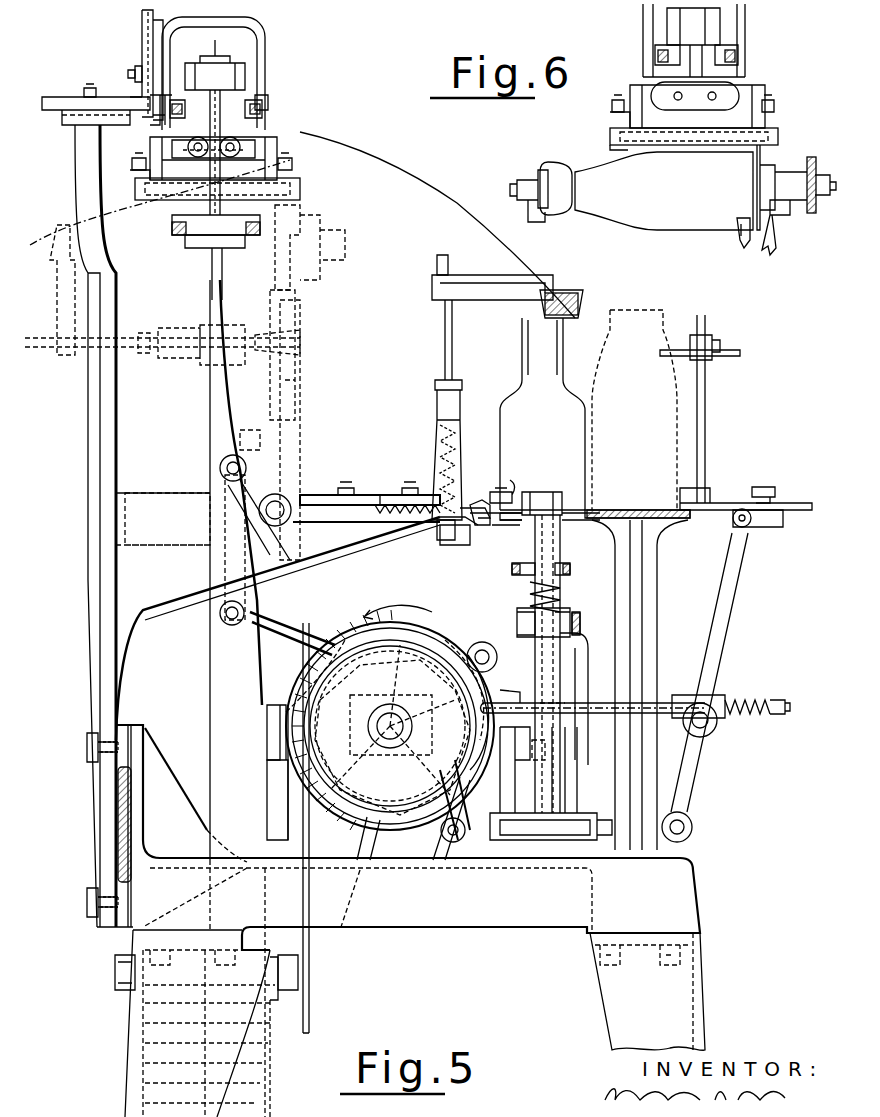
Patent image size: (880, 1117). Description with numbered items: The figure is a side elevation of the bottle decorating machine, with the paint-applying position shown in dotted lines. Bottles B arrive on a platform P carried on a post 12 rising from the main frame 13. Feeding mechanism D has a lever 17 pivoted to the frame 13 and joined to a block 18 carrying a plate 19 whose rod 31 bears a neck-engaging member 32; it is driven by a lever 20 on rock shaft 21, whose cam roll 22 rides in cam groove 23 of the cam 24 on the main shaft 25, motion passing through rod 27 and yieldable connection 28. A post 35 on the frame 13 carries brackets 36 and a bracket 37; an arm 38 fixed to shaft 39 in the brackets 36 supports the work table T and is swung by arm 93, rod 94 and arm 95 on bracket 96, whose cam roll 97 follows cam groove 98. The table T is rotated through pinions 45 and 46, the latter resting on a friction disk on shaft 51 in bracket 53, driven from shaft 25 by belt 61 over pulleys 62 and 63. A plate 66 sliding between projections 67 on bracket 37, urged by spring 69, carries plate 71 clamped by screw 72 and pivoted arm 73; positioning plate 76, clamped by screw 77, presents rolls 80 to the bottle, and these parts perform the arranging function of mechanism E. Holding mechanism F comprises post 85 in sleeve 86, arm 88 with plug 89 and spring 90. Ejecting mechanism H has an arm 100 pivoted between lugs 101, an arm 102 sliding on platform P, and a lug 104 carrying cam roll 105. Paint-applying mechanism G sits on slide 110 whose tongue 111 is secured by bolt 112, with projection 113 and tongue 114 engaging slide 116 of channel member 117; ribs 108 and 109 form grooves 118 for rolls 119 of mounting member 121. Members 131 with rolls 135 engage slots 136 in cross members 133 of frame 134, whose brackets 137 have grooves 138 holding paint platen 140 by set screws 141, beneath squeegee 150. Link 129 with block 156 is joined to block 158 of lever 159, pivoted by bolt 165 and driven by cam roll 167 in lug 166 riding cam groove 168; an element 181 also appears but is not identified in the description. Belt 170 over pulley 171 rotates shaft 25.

In FIG. 5, the post 12 is at (648, 622).
In FIG. 5, the main frame 13 is at (680, 890).
In FIG. 5, the lever 17 is at (720, 635).
In FIG. 5, the block 18 is at (775, 525).
In FIG. 5, the plate 19 is at (793, 500).
In FIG. 5, the lever 20 is at (440, 790).
In FIG. 5, the rock shaft 21 is at (460, 810).
In FIG. 5, the cam roll 22 is at (455, 655).
In FIG. 5, the cam groove 23 is at (462, 650).
In FIG. 5, the cam 24 is at (362, 820).
In FIG. 5, the main shaft 25 is at (380, 726).
In FIG. 5, the rod 27 is at (610, 713).
In FIG. 5, the pivotable and yieldable connection 28 is at (725, 700).
In FIG. 5, the rod 31 is at (706, 408).
In FIG. 5, the member 32 is at (678, 350).
In FIG. 5, the post 35 is at (100, 420).
In FIG. 5, the brackets 36 is at (152, 510).
In FIG. 5, the bracket 37 is at (200, 575).
In FIG. 6, the arm 38 is at (770, 238).
In FIG. 5, the arm 38 is at (288, 390).
In FIG. 5, the shaft 39 is at (270, 530).
In FIG. 5, the pinion 45 is at (335, 258).
In FIG. 5, the pinion 46 is at (300, 270).
In FIG. 5, the shaft 51 is at (548, 746).
In FIG. 5, the bracket 53 is at (590, 657).
In FIG. 5, the belt 61 is at (505, 700).
In FIG. 5, the pulley 62 is at (300, 810).
In FIG. 5, the pulley 63 is at (565, 700).
In FIG. 5, the plate 66 is at (400, 522).
In FIG. 5, the projections 67 is at (440, 526).
In FIG. 5, the spring 69 is at (412, 530).
In FIG. 5, the plate 71 is at (392, 503).
In FIG. 5, the clamping screw 72 is at (410, 486).
In FIG. 5, the arm 73 is at (482, 520).
In FIG. 5, the bottle positioning plate 76 is at (360, 496).
In FIG. 5, the clamping screw 77 is at (346, 486).
In FIG. 5, the roll 80 is at (508, 490).
In FIG. 5, the post 85 is at (440, 256).
In FIG. 5, the sleeve 86 is at (435, 400).
In FIG. 5, the arm 88 is at (485, 283).
In FIG. 5, the plug 89 is at (560, 296).
In FIG. 5, the spring 90 is at (455, 462).
In FIG. 5, the arm 93 is at (250, 478).
In FIG. 5, the rod 94 is at (225, 520).
In FIG. 5, the arm 95 is at (290, 632).
In FIG. 5, the bracket 96 is at (500, 640).
In FIG. 5, the cam roll 97 is at (401, 607).
In FIG. 5, the cam groove 98 is at (440, 818).
In FIG. 5, the arm 100 is at (545, 550).
In FIG. 5, the lugs 101 is at (580, 843).
In FIG. 5, the arm 102 is at (542, 492).
In FIG. 5, the lug 104 is at (556, 740).
In FIG. 5, the cam roll 105 is at (512, 735).
In FIG. 5, the rib 108 is at (168, 128).
In FIG. 5, the rib 109 is at (278, 66).
In FIG. 5, the slide 110 is at (70, 97).
In FIG. 5, the tongue 111 is at (52, 112).
In FIG. 5, the bolt 112 is at (90, 88).
In FIG. 5, the projection 113 is at (142, 33).
In FIG. 5, the tongue 114 is at (145, 30).
In FIG. 5, the slide 116 is at (163, 22).
In FIG. 6, the inverted channel member 117 is at (748, 22).
In FIG. 5, the inverted channel member 117 is at (262, 48).
In FIG. 5, the groove 118 is at (135, 74).
In FIG. 6, the rolls 119 is at (660, 48).
In FIG. 5, the rolls 119 is at (178, 104).
In FIG. 6, the mounting member 121 is at (712, 40).
In FIG. 5, the mounting member 121 is at (226, 47).
In FIG. 5, the link 129 is at (238, 155).
In FIG. 6, the member 131 is at (690, 106).
In FIG. 5, the member 131 is at (214, 160).
In FIG. 6, the cross members 133 is at (655, 92).
In FIG. 5, the cross members 133 is at (290, 168).
In FIG. 6, the rectangular frame 134 is at (612, 120).
In FIG. 5, the rectangular frame 134 is at (130, 176).
In FIG. 5, the rolls 135 is at (240, 140).
In FIG. 5, the inclined elongated slots 136 is at (240, 152).
In FIG. 6, the bracket 137 is at (780, 132).
In FIG. 5, the bracket 137 is at (302, 186).
In FIG. 6, the groove 138 is at (775, 142).
In FIG. 5, the groove 138 is at (295, 194).
In FIG. 6, the paint platen 140 is at (592, 137).
In FIG. 5, the paint platen 140 is at (290, 200).
In FIG. 6, the set screws 141 is at (618, 100).
In FIG. 5, the set screws 141 is at (130, 166).
In FIG. 5, the squeegee 150 is at (160, 198).
In FIG. 5, the block 156 is at (172, 222).
In FIG. 5, the block 158 is at (232, 248).
In FIG. 5, the lever 159 is at (220, 405).
In FIG. 5, the bolt 165 is at (115, 972).
In FIG. 5, the lug 166 is at (271, 704).
In FIG. 5, the cam roll 167 is at (281, 800).
In FIG. 5, the cam groove 168 is at (310, 830).
In FIG. 5, the belt 170 is at (310, 968).
In FIG. 5, the pulley 171 is at (380, 850).
In FIG. 5, the block 181 is at (130, 72).
In FIG. 6, the bottle B is at (664, 230).
In FIG. 5, the bottle B is at (508, 378).
In FIG. 5, the feeding mechanism D is at (700, 500).
In FIG. 5, the arranging mechanism E is at (518, 582).
In FIG. 5, the bottle holding mechanism F is at (438, 340).
In FIG. 6, the paint-applying mechanism G is at (735, 118).
In FIG. 5, the paint-applying mechanism G is at (250, 175).
In FIG. 5, the bottle ejecting mechanism H is at (525, 490).
In FIG. 5, the platform P is at (684, 520).
In FIG. 5, the work table T is at (575, 510).